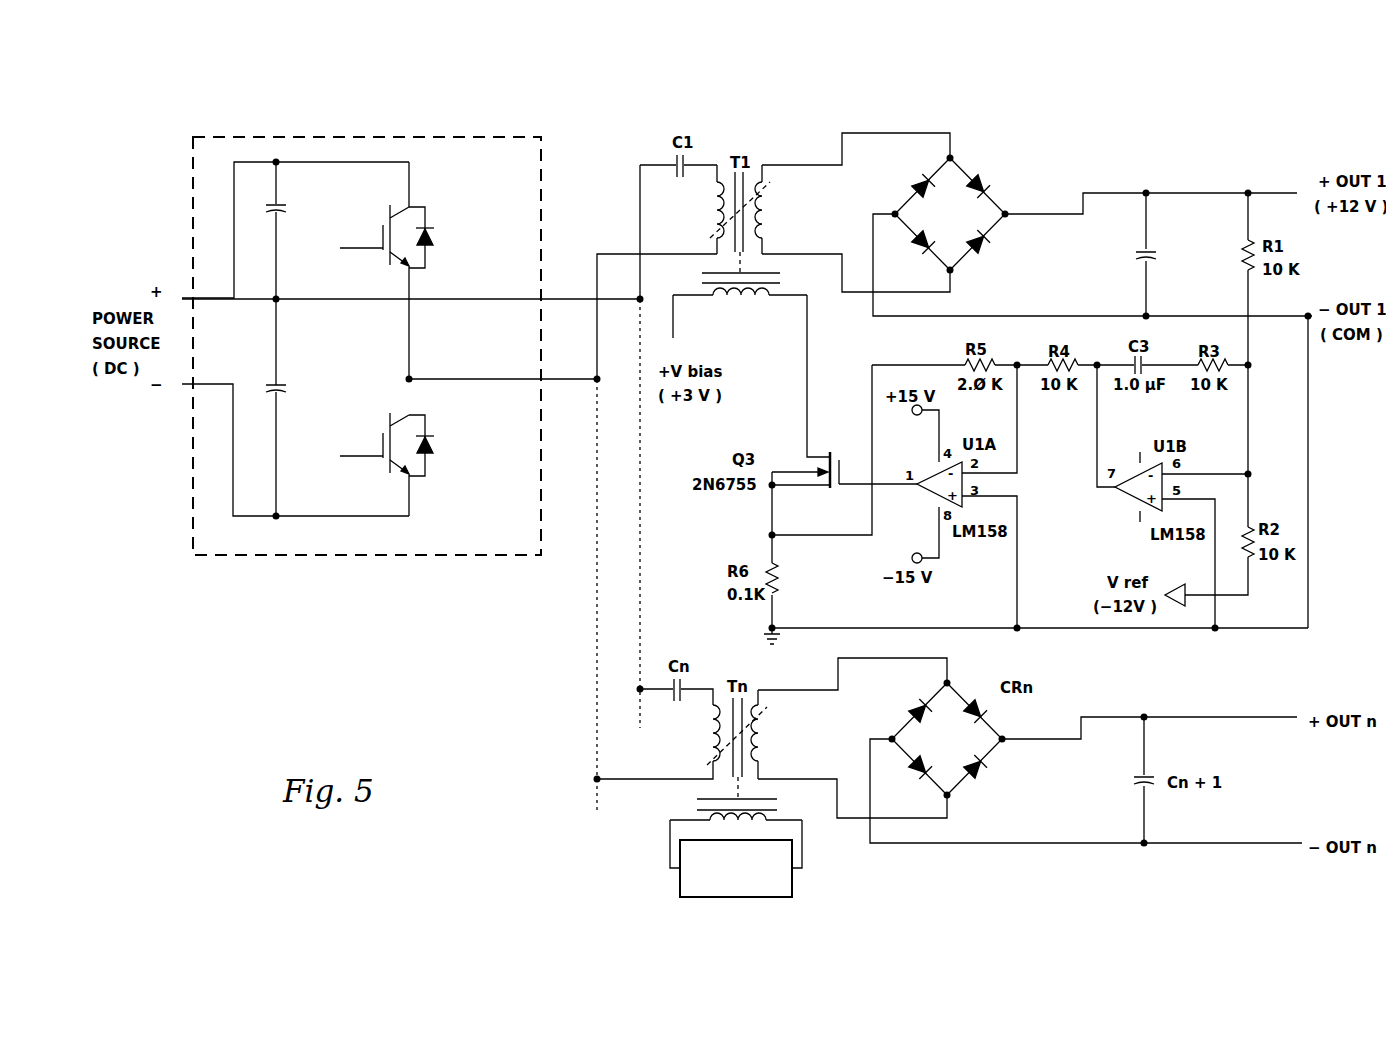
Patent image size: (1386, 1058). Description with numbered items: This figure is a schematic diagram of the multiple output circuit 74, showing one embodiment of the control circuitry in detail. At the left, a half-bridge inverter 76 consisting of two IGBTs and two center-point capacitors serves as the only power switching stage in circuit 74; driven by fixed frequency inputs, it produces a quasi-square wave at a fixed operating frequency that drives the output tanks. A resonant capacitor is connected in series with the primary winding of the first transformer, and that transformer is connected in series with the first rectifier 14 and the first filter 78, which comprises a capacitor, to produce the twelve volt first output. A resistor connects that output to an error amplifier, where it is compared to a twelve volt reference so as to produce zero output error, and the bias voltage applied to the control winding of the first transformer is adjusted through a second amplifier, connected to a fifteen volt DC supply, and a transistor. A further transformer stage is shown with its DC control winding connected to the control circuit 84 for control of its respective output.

The half-bridge inverter 76 is at (399, 137).
The first rectifier 14 is at (957, 163).
The circuit 74 is at (1063, 125).
The first filter 78 is at (1152, 251).
The control circuit 84 is at (793, 884).